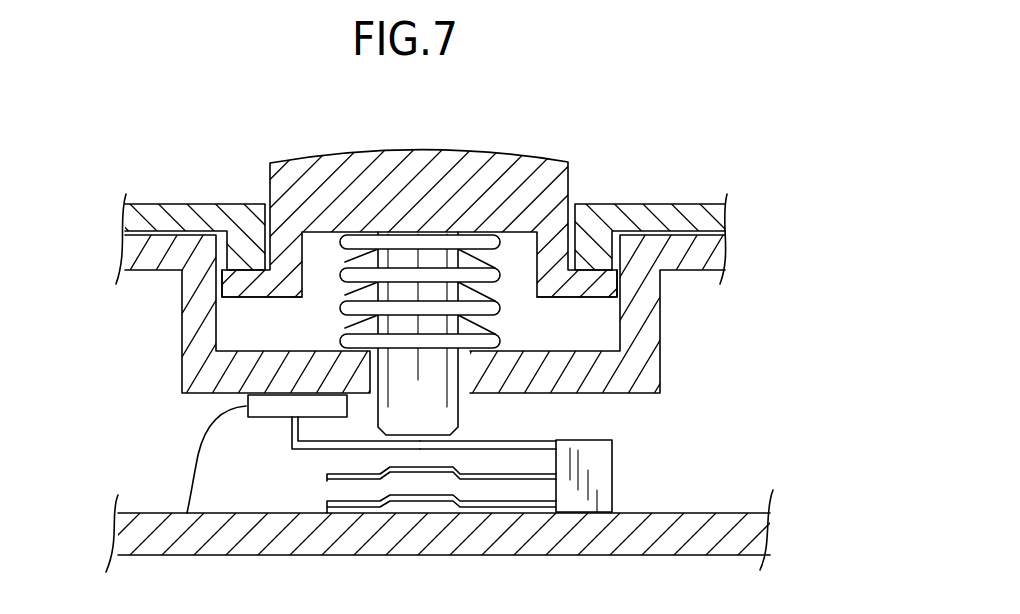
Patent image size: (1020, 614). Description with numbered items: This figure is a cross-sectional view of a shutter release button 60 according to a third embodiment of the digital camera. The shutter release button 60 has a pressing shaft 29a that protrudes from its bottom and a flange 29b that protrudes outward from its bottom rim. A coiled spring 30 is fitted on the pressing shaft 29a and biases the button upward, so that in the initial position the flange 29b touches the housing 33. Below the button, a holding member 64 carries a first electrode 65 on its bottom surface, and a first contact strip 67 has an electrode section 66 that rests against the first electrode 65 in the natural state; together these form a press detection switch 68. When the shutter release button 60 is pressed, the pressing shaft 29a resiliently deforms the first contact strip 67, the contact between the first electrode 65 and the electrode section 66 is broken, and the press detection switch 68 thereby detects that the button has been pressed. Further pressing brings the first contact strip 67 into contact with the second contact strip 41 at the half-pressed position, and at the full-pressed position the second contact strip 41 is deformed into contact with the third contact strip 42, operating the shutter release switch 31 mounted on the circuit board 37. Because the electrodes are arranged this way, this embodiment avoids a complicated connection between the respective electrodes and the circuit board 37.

The shutter release button 60 is at (429, 165).
The pressing shaft 29a is at (453, 398).
The flange 29b is at (252, 292).
The coiled spring 30 is at (500, 308).
The housing 33 is at (196, 212).
The holding member 64 is at (158, 248).
The press detection switch 68 is at (97, 377).
The first electrode 65 is at (248, 398).
The electrode section 66 is at (290, 430).
The first contact strip 67 is at (522, 444).
The second contact strip 41 is at (328, 474).
The third contact strip 42 is at (328, 504).
The shutter release switch 31 is at (593, 494).
The circuit board 37 is at (387, 542).